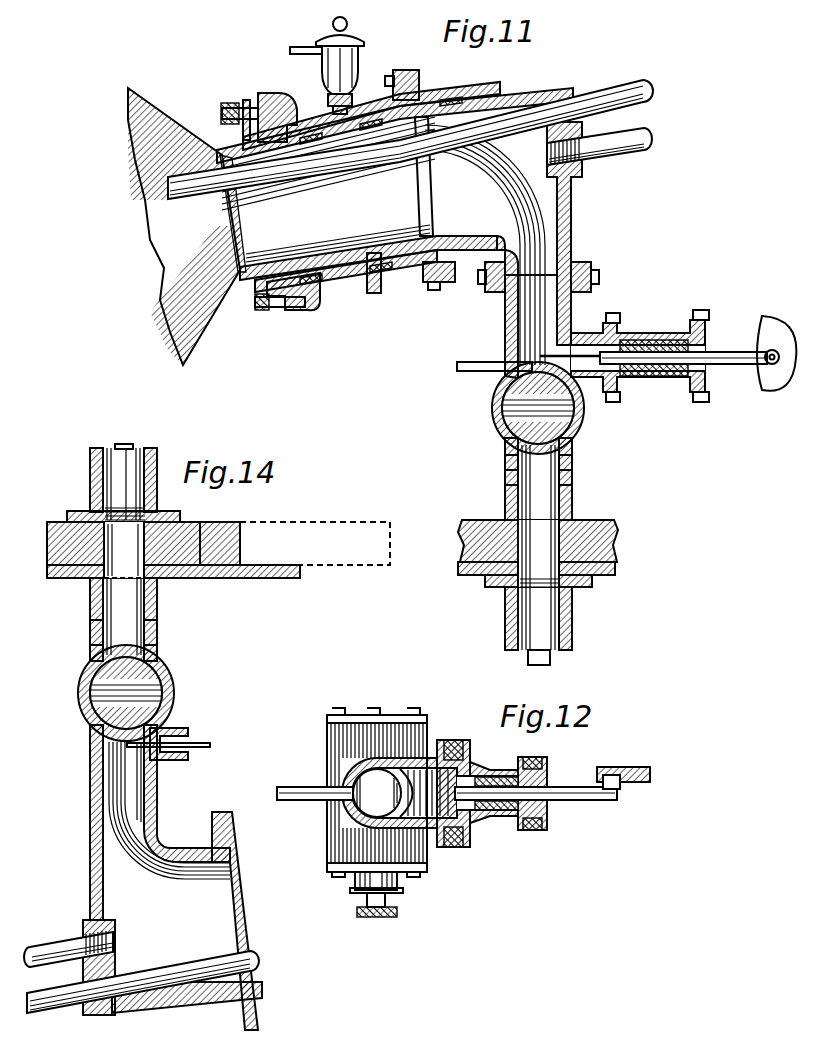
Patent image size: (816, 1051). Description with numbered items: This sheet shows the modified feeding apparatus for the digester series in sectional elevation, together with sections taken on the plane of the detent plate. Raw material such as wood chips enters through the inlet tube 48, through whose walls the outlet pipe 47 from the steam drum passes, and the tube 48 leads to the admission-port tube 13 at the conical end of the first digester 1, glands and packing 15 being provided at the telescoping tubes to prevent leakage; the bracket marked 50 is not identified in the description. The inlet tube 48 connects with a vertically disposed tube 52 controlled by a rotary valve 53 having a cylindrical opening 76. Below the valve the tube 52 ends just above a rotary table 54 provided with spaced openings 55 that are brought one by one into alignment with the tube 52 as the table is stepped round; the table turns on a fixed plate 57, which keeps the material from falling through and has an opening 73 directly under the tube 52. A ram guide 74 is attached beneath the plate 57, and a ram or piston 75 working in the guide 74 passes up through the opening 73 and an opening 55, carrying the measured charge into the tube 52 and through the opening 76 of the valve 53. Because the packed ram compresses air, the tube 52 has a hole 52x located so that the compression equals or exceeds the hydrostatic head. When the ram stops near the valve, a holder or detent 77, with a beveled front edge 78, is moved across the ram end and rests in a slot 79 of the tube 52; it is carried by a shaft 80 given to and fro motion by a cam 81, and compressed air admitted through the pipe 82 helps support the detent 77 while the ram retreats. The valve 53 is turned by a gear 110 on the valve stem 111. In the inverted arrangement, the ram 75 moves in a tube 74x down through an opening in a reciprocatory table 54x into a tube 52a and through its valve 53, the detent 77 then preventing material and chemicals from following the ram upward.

In FIG. 11, the digester 1 is at (204, 333).
In FIG. 11, the tube 13 is at (282, 262).
In FIG. 11, the glands and packing 15 is at (315, 258).
In FIG. 11, the outlet pipe 47 is at (609, 88).
In FIG. 14, the outlet pipe 47 is at (200, 958).
In FIG. 11, the inlet tube 48 is at (572, 211).
In FIG. 14, the inlet tube 48 is at (93, 883).
In FIG. 11, the bracket 50 is at (338, 284).
In FIG. 11, the vertically-disposed tube 52 is at (505, 312).
In FIG. 14, the vertically-disposed tube 52 is at (160, 786).
In FIG. 12, the vertically-disposed tube 52 is at (348, 812).
In FIG. 11, the hole 52x is at (572, 480).
In FIG. 14, the hole 52x is at (155, 647).
In FIG. 14, the tube 52a is at (92, 630).
In FIG. 11, the rotary valve 53 is at (489, 401).
In FIG. 14, the rotary valve 53 is at (92, 734).
In FIG. 12, the rotary valve 53 is at (377, 792).
In FIG. 11, the rotary table 54 is at (617, 538).
In FIG. 14, the reciprocatory table 54x is at (216, 522).
In FIG. 11, the openings 55 is at (552, 540).
In FIG. 14, the openings 55 is at (108, 548).
In FIG. 11, the fixed plate 57 is at (617, 568).
In FIG. 14, the fixed plate 57 is at (173, 571).
In FIG. 11, the opening 73 is at (510, 586).
In FIG. 14, the opening 73 is at (123, 516).
In FIG. 11, the ram-guide 74 is at (505, 622).
In FIG. 14, the tube 74x is at (90, 481).
In FIG. 11, the ram 75 is at (560, 626).
In FIG. 14, the ram 75 is at (146, 490).
In FIG. 11, the cylindrical opening 76 is at (500, 423).
In FIG. 14, the cylindrical opening 76 is at (158, 703).
In FIG. 11, the holder or detent 77 is at (587, 338).
In FIG. 14, the holder or detent 77 is at (199, 747).
In FIG. 12, the holder or detent 77 is at (470, 772).
In FIG. 11, the beveled front edge 78 is at (578, 382).
In FIG. 12, the beveled front edge 78 is at (423, 824).
In FIG. 11, the slot 79 is at (548, 355).
In FIG. 12, the slot 79 is at (392, 787).
In FIG. 11, the shaft 80 is at (734, 366).
In FIG. 12, the shaft 80 is at (573, 800).
In FIG. 11, the cam 81 is at (764, 326).
In FIG. 12, the cam 81 is at (638, 782).
In FIG. 11, the pipe 82 is at (474, 358).
In FIG. 12, the gear 110 is at (368, 917).
In FIG. 12, the valve-stem 111 is at (366, 900).